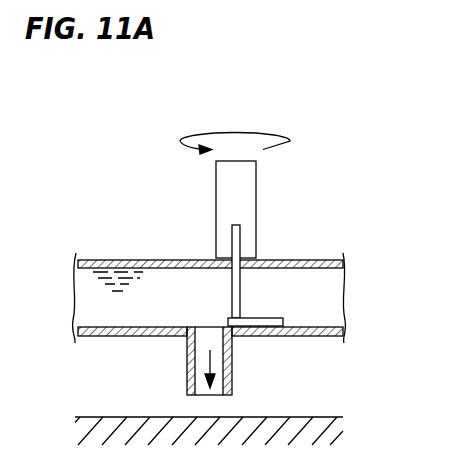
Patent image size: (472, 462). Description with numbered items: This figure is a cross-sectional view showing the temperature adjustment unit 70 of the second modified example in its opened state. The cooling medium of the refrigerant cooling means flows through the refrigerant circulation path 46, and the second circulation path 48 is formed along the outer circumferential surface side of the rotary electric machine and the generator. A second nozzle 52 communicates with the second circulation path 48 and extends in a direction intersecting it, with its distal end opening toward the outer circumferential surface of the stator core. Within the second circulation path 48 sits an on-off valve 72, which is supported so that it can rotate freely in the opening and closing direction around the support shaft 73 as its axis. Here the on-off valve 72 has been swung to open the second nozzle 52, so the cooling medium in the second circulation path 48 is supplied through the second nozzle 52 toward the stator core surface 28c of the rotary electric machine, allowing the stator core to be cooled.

The refrigerant circulation path 46 is at (115, 251).
The second circulation path 48 is at (318, 258).
The second nozzle 52 is at (187, 360).
The temperature adjustment unit 70 is at (265, 181).
The on-off valve 72 is at (275, 316).
The support shaft 73 is at (228, 290).
The surface of member 28 28c is at (300, 416).